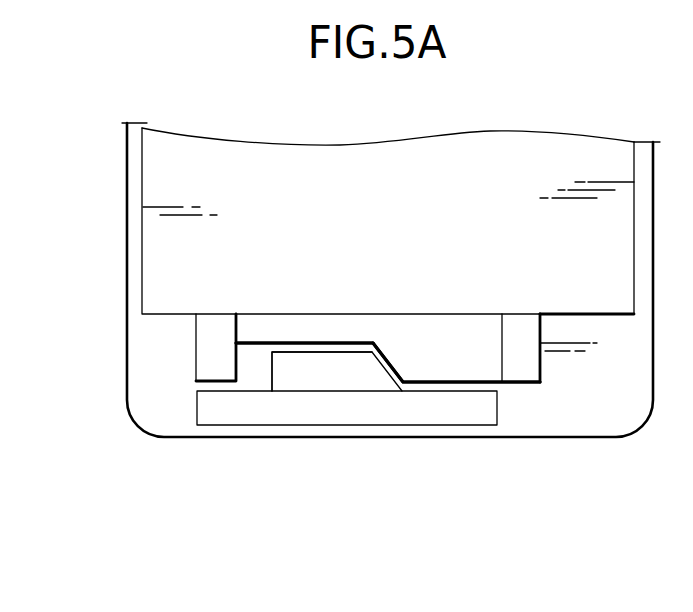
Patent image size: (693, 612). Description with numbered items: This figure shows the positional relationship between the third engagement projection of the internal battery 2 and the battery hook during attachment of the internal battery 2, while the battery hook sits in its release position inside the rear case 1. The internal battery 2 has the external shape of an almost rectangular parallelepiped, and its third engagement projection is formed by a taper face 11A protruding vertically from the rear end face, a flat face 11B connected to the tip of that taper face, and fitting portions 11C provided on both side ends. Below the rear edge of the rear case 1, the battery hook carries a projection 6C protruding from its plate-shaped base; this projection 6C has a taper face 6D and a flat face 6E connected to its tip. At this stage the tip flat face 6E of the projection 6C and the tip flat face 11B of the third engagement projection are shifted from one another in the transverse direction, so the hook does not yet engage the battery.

The rear case 1 is at (125, 164).
The internal battery 2 is at (140, 227).
The fitting portion 11C is at (222, 380).
The taper face 11A is at (390, 356).
The flat face 6E is at (290, 343).
The taper face 6D is at (390, 356).
The projection 6C is at (313, 377).
The flat face 11B is at (462, 383).